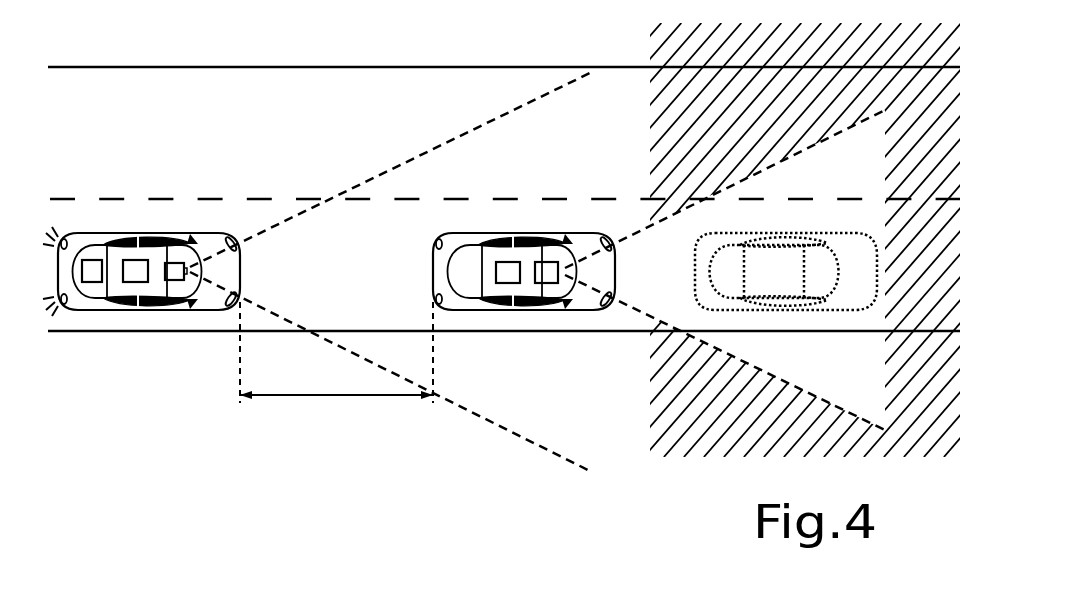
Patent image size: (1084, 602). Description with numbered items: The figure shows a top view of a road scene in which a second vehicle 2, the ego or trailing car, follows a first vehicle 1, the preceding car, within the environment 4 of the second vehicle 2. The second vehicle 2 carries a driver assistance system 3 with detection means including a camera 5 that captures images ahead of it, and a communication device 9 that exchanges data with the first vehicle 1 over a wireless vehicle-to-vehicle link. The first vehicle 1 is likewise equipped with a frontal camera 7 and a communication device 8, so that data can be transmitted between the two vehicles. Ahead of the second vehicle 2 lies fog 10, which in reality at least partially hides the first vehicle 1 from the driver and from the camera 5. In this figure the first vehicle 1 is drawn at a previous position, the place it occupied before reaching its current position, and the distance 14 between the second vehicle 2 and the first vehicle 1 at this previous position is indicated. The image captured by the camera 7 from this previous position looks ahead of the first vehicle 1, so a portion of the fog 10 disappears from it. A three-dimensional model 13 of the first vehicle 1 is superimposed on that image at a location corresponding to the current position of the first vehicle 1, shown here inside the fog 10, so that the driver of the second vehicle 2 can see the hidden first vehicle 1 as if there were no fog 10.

The first vehicle 1 is at (526, 222).
The second vehicle 2 is at (185, 229).
The driver assistance system 3 is at (90, 282).
The environment 4 is at (355, 287).
The camera 5 is at (174, 280).
The camera 7 is at (548, 272).
The communication device 8 is at (508, 272).
The communication device 9 is at (133, 282).
The fog 10 is at (737, 124).
The three-dimensional model 13 is at (825, 220).
The distance 14 is at (343, 396).